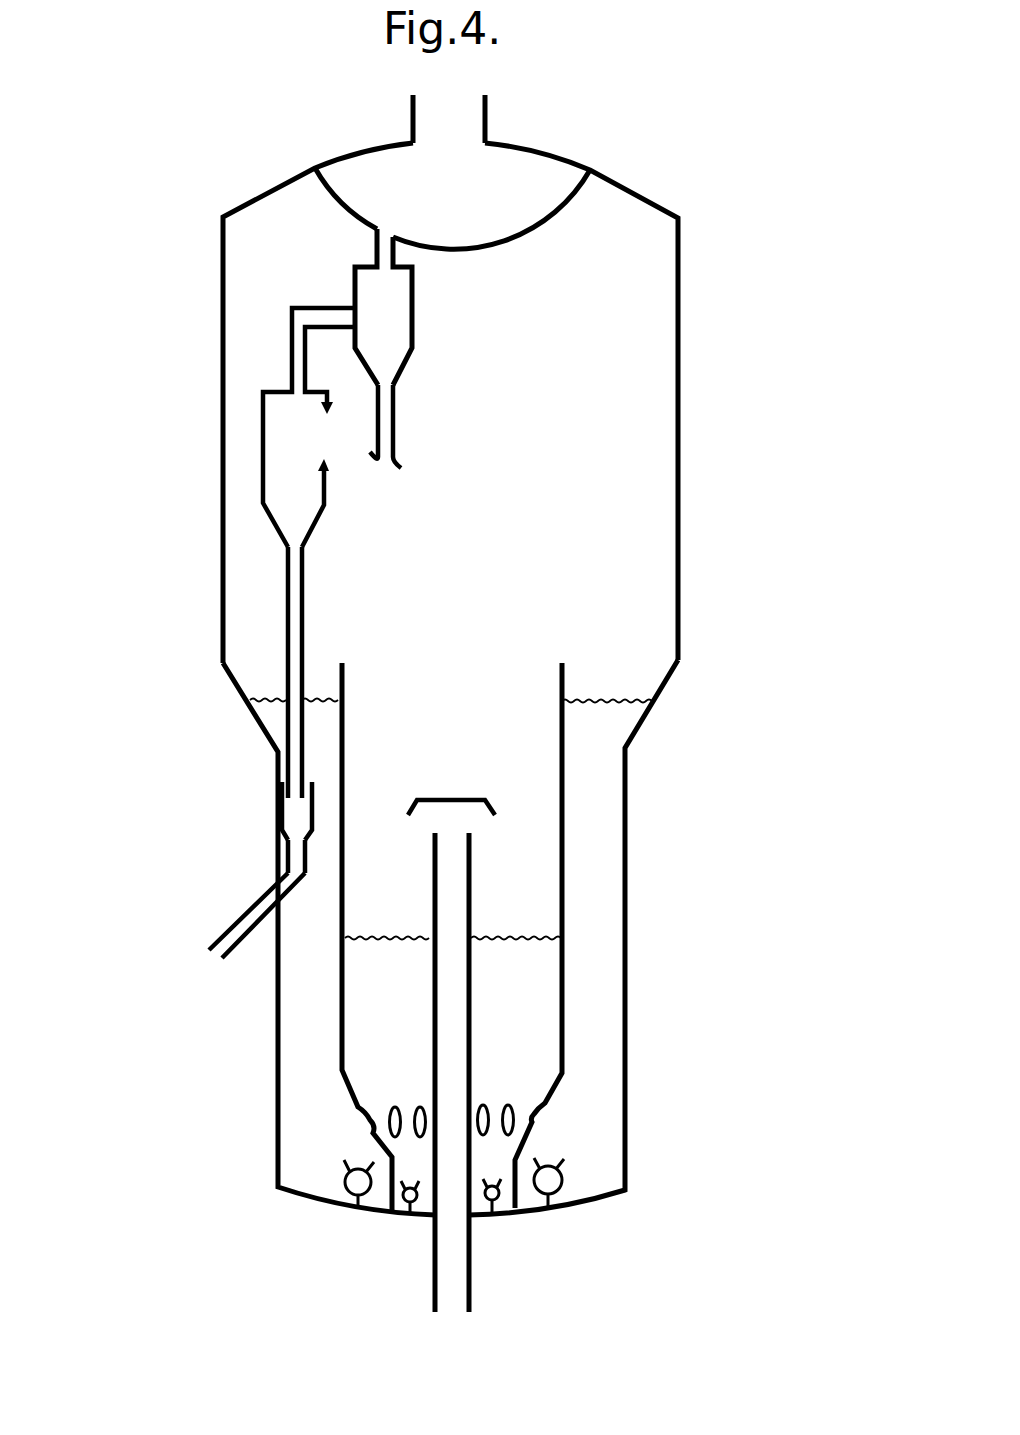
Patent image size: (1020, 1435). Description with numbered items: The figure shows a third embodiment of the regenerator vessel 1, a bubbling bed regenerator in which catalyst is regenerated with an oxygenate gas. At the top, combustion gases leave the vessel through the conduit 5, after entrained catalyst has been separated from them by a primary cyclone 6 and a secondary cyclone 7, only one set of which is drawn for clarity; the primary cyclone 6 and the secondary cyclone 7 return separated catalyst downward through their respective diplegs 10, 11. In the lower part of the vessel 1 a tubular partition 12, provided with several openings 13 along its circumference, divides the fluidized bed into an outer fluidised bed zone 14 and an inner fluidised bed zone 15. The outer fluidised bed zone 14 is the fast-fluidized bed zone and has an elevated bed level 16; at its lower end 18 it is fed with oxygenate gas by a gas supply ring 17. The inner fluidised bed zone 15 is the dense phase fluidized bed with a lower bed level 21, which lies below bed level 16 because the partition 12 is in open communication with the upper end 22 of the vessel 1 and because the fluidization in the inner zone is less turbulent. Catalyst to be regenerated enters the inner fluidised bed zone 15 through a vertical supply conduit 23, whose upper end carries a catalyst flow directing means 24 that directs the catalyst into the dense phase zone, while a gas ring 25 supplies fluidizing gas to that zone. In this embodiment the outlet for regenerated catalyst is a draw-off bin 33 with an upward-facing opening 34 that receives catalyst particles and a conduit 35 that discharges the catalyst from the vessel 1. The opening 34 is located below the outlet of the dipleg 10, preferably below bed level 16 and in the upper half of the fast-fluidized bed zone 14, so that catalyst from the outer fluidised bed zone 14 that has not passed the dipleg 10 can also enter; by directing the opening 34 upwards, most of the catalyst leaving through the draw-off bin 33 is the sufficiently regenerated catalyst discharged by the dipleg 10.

The regenerator vessel 1 is at (627, 1015).
The conduit 5 is at (487, 125).
The primary cyclone 6 is at (327, 492).
The secondary cyclone 7 is at (413, 322).
The dipleg 10 is at (303, 605).
The dipleg 11 is at (394, 420).
The tubular partition 12 is at (564, 850).
The openings 13 is at (395, 1106).
The outer fluidised bed zone 14 is at (324, 1009).
The inner fluidised bed zone 15 is at (534, 1009).
The bed level 16 is at (617, 698).
The gas supply ring 17 is at (355, 1210).
The lower end 18 is at (598, 1147).
The bed level 21 is at (396, 935).
The upper end 22 is at (592, 610).
The vertical supply conduit 23 is at (470, 895).
The catalyst flow directing means 24 is at (478, 797).
The gas ring 25 is at (410, 1218).
The draw-off bin 33 is at (315, 815).
The opening 34 is at (310, 778).
The conduit 35 is at (236, 955).